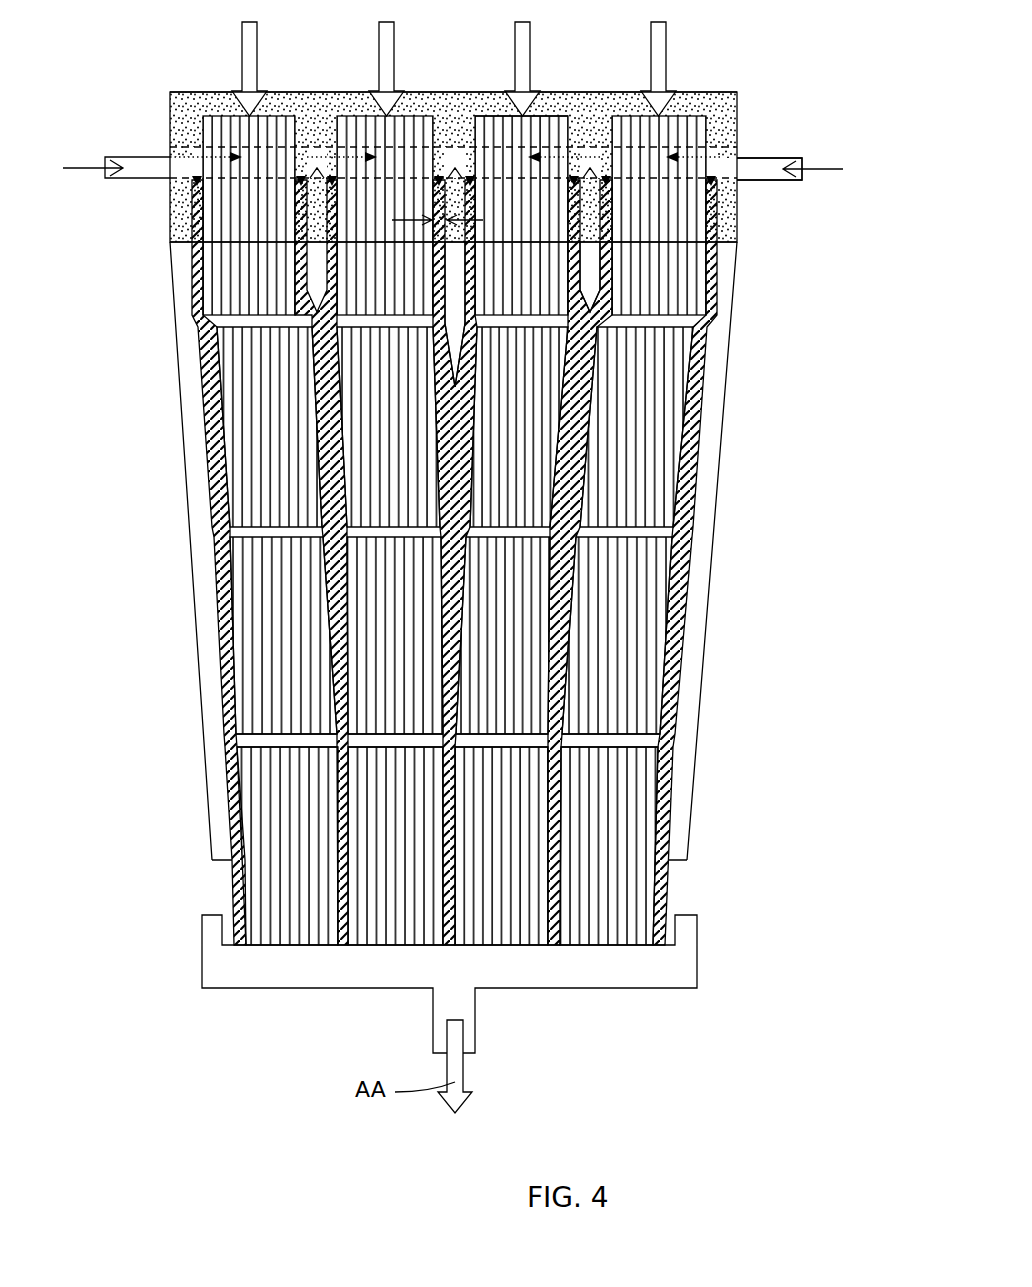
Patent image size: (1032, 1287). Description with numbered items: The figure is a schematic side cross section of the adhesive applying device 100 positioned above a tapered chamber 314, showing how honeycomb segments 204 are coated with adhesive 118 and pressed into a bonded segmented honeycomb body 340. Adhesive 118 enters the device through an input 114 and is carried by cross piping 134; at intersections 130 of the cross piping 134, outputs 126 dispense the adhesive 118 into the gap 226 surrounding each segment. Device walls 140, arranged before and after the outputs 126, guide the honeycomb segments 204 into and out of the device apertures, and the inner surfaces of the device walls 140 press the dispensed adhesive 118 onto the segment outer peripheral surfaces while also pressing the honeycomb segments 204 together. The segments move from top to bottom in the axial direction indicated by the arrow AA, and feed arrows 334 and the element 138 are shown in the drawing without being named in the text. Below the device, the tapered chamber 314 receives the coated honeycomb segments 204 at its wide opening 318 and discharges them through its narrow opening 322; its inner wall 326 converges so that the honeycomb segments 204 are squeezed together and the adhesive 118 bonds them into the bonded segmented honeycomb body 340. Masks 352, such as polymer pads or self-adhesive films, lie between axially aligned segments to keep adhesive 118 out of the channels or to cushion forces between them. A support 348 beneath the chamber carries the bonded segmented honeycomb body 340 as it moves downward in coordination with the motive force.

The adhesive applying device 100 is at (143, 138).
The input 114 is at (785, 157).
The adhesive 118 is at (327, 155).
The output 126 is at (447, 175).
The intersection 130 is at (597, 125).
The cross piping 134 is at (435, 138).
The tube bundle top 138 is at (528, 122).
The device wall 140 is at (728, 114).
The honeycomb segment 204 is at (617, 925).
The gap 226 is at (428, 222).
The tapered chamber 314 is at (192, 375).
The wide opening 318 is at (742, 242).
The narrow opening 322 is at (682, 873).
The inner wall 326 is at (206, 576).
The feed inlet arrow 334 is at (247, 58).
The bonded segmented honeycomb body 340 is at (195, 884).
The support 348 is at (688, 975).
The mask 352 is at (640, 741).